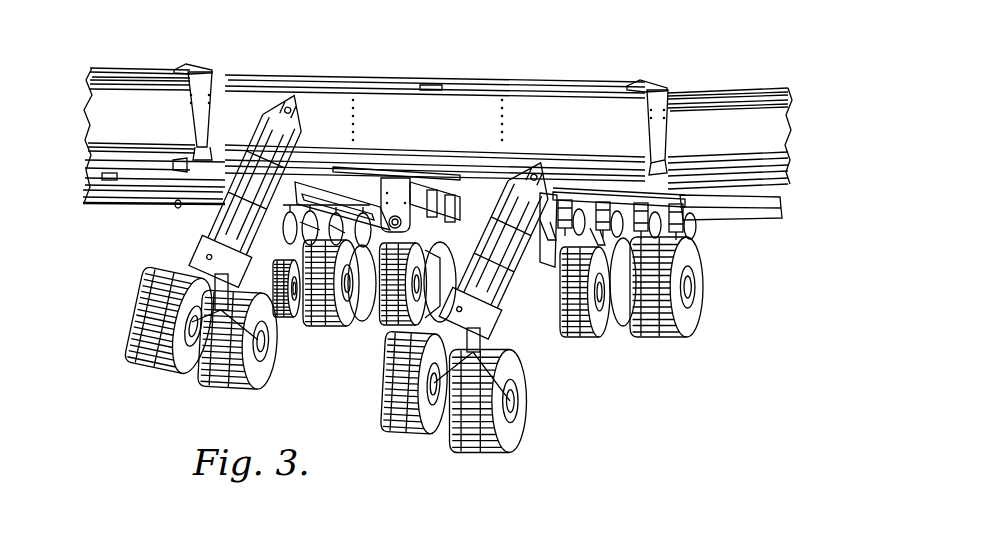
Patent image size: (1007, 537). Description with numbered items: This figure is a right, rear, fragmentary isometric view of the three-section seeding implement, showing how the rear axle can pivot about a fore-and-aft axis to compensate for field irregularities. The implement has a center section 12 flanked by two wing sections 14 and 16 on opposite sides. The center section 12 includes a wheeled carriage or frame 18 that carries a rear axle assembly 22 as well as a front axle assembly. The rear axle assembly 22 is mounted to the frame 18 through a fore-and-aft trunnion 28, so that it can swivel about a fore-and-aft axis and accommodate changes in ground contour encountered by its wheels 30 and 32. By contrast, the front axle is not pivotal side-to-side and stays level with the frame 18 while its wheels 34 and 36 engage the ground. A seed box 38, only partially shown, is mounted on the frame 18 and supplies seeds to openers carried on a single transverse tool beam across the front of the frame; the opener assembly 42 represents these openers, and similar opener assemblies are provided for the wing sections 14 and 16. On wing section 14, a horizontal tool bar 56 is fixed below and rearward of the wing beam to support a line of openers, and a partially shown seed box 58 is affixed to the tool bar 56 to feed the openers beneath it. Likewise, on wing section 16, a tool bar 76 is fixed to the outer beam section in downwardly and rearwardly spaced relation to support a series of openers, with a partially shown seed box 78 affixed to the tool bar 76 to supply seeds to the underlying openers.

The center section 12 is at (435, 60).
The wing section 14 is at (743, 80).
The wing section 16 is at (160, 60).
The wheeled carriage or frame 18 is at (433, 183).
The rear axle assembly 22 is at (522, 330).
The fore-and-aft trunnion 28 is at (394, 178).
The wheel 30 is at (140, 360).
The wheel 32 is at (487, 452).
The wheel 34 is at (687, 322).
The wheel 36 is at (390, 318).
The seed box 38 is at (325, 80).
The opener assembly 42 is at (293, 333).
The horizontal tool bar 56 is at (733, 212).
The seed box 58 is at (707, 88).
The tool bar 76 is at (128, 193).
The seed box 78 is at (112, 72).